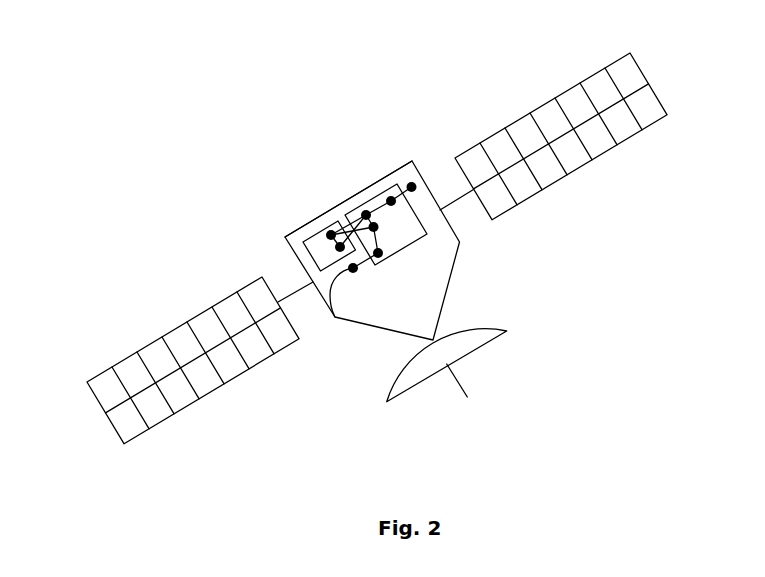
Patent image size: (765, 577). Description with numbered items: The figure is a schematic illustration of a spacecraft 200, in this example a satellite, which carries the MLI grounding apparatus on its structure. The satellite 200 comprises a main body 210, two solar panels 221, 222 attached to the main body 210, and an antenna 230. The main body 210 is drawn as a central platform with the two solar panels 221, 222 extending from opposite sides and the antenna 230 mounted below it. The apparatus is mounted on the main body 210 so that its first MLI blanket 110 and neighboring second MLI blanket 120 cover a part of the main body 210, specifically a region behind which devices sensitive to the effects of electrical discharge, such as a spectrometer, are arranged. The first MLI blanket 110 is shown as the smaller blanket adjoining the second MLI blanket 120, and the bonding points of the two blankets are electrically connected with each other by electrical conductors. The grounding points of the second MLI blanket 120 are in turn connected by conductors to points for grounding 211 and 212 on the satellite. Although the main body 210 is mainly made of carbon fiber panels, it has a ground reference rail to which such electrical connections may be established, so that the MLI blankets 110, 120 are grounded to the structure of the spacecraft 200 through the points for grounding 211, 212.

The spacecraft 200 is at (74, 41).
The first MLI blanket 110 is at (325, 229).
The second MLI blanket 120 is at (389, 175).
The main body 210 is at (446, 297).
The point for grounding 211 is at (335, 317).
The point for grounding 212 is at (420, 182).
The solar panel 221 is at (167, 333).
The solar panel 222 is at (557, 97).
The antenna 230 is at (492, 333).